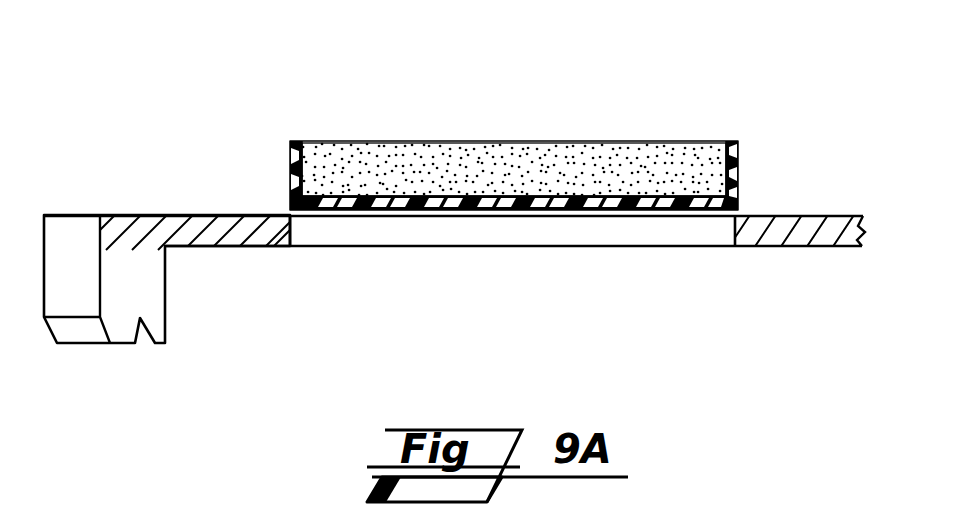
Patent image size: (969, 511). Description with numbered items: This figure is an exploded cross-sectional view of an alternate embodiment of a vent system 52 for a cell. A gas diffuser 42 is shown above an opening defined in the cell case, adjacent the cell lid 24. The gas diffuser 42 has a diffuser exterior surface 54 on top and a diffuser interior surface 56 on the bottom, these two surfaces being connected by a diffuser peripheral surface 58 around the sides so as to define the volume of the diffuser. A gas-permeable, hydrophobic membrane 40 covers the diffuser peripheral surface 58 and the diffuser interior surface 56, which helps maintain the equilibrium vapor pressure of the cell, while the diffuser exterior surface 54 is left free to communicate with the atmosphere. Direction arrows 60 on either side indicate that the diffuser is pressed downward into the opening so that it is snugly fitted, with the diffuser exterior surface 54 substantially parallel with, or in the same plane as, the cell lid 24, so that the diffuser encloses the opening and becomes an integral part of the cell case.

The cell lid 24 is at (133, 215).
The gas-permeable, hydrophobic membrane 40 is at (740, 145).
The gas diffuser 42 is at (338, 153).
The vent system 52 is at (438, 275).
The diffuser exterior surface 54 is at (532, 141).
The diffuser interior surface 56 is at (655, 200).
The diffuser peripheral surface 58 is at (290, 154).
The direction arrows 60 is at (268, 162).